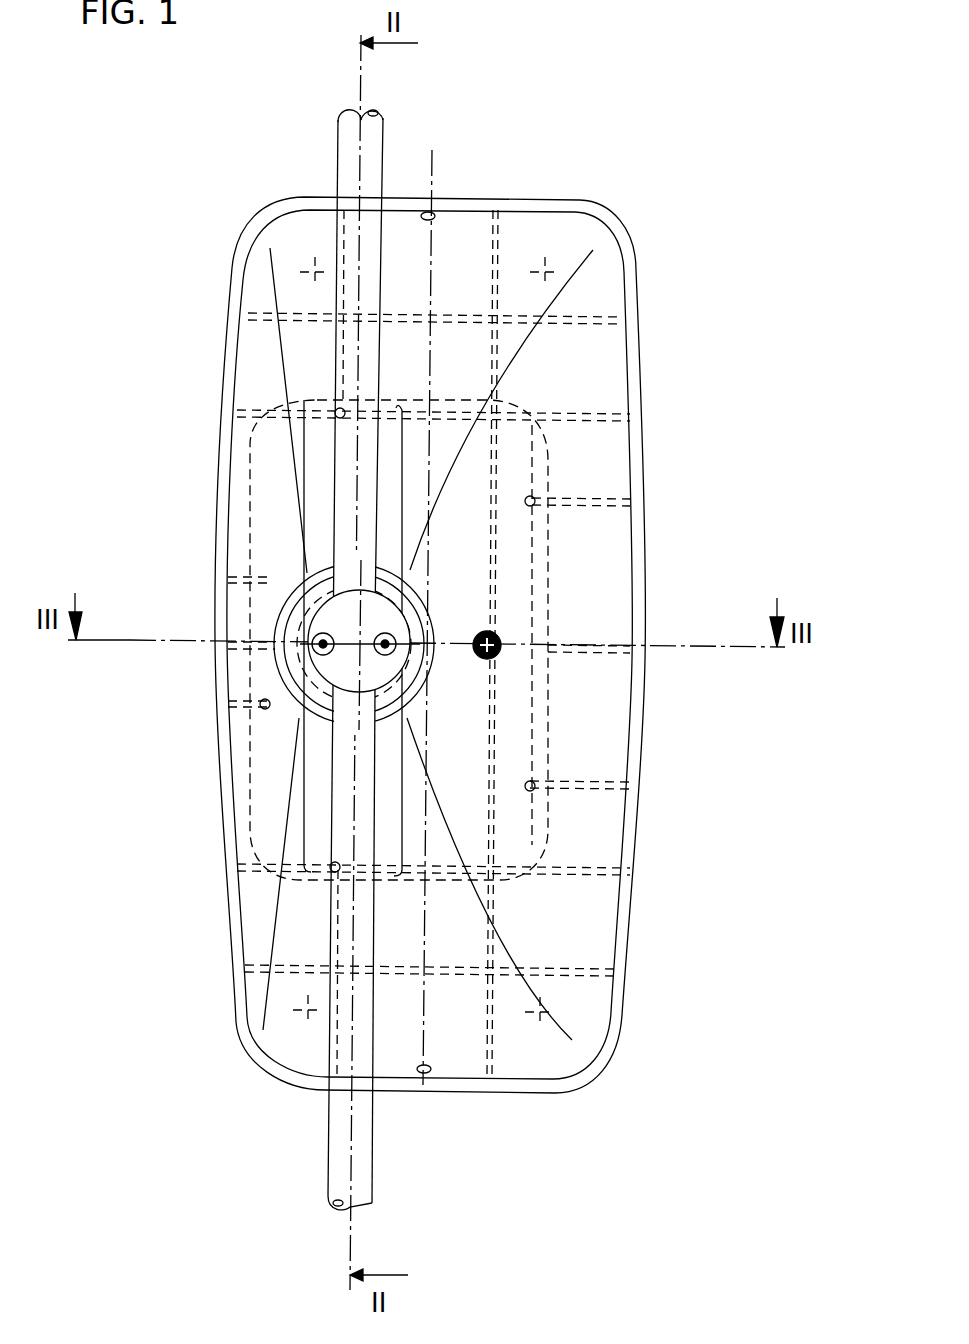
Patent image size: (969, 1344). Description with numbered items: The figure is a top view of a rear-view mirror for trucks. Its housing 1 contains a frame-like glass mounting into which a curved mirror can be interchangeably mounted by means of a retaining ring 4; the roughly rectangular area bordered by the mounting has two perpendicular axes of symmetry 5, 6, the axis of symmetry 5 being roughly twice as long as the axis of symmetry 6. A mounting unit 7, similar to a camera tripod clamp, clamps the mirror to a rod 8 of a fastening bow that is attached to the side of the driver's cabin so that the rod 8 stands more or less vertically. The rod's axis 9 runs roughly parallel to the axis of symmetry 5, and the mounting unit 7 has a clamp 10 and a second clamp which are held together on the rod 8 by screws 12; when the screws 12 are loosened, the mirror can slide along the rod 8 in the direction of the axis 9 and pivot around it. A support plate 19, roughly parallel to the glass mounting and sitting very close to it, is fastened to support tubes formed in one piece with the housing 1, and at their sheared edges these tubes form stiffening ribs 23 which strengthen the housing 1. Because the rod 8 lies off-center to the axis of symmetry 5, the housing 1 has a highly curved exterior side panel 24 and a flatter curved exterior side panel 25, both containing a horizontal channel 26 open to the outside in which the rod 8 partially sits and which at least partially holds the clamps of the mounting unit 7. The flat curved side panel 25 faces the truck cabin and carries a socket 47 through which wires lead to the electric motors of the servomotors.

The housing 1 is at (635, 300).
The retaining ring 4 is at (630, 365).
The axis of symmetry 5 is at (433, 271).
The axis of symmetry 6 is at (443, 640).
The mounting unit 7 is at (303, 655).
The rod 8 is at (340, 1163).
The rod's axis 9 is at (360, 167).
The clamp 10 is at (327, 628).
The screws 12 is at (303, 640).
The support plate 19 is at (548, 562).
The stiffening ribs 23 is at (573, 870).
The highly curved exterior side panel 24 is at (285, 483).
The flat curved exterior side panel 25 is at (578, 743).
The horizontal channel 26 is at (318, 800).
The socket 47 is at (487, 631).